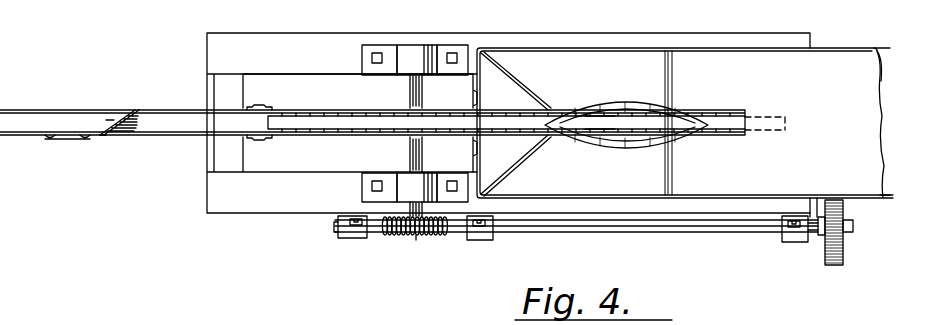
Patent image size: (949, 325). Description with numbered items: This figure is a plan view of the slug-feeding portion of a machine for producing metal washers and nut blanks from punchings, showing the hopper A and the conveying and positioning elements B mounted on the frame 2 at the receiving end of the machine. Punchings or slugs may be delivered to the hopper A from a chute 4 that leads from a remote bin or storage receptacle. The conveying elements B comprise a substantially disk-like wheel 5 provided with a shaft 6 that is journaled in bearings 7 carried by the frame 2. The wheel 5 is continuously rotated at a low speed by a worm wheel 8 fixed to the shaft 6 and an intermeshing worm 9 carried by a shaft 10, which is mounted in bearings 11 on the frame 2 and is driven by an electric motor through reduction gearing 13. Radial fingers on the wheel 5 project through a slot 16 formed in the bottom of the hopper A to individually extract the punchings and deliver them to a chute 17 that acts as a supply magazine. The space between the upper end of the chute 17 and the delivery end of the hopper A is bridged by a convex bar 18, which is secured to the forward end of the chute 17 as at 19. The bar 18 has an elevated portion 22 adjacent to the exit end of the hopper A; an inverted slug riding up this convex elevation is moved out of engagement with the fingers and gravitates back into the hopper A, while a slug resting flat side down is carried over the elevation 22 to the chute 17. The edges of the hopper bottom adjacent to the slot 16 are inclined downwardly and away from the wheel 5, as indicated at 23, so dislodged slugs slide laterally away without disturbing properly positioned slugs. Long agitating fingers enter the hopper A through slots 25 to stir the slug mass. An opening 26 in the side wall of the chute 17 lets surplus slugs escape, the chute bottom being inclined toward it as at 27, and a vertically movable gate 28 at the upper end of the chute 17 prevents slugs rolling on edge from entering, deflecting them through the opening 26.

The frame 2 is at (323, 42).
The conveying and positioning elements B is at (343, 112).
The bearings 7 is at (404, 52).
The shaft 6 is at (410, 154).
The chute 17 is at (180, 130).
The wheel 5 is at (358, 125).
The convex bar 18 is at (284, 122).
The securing point of bar 19 is at (285, 136).
The inclined bottom of chute 27 is at (133, 111).
The gate 28 is at (112, 118).
The opening 26 is at (118, 137).
The hopper A is at (634, 62).
The elevated portion 22 is at (549, 134).
The inclined surfaces 23 is at (636, 104).
The slot 16 is at (596, 115).
The slots 25 is at (727, 118).
The chute 4 is at (858, 132).
The shaft 10 is at (613, 232).
The bearings 11 is at (350, 234).
The worm 9 is at (400, 238).
The worm wheel 8 is at (421, 240).
The reduction gearing 13 is at (845, 216).